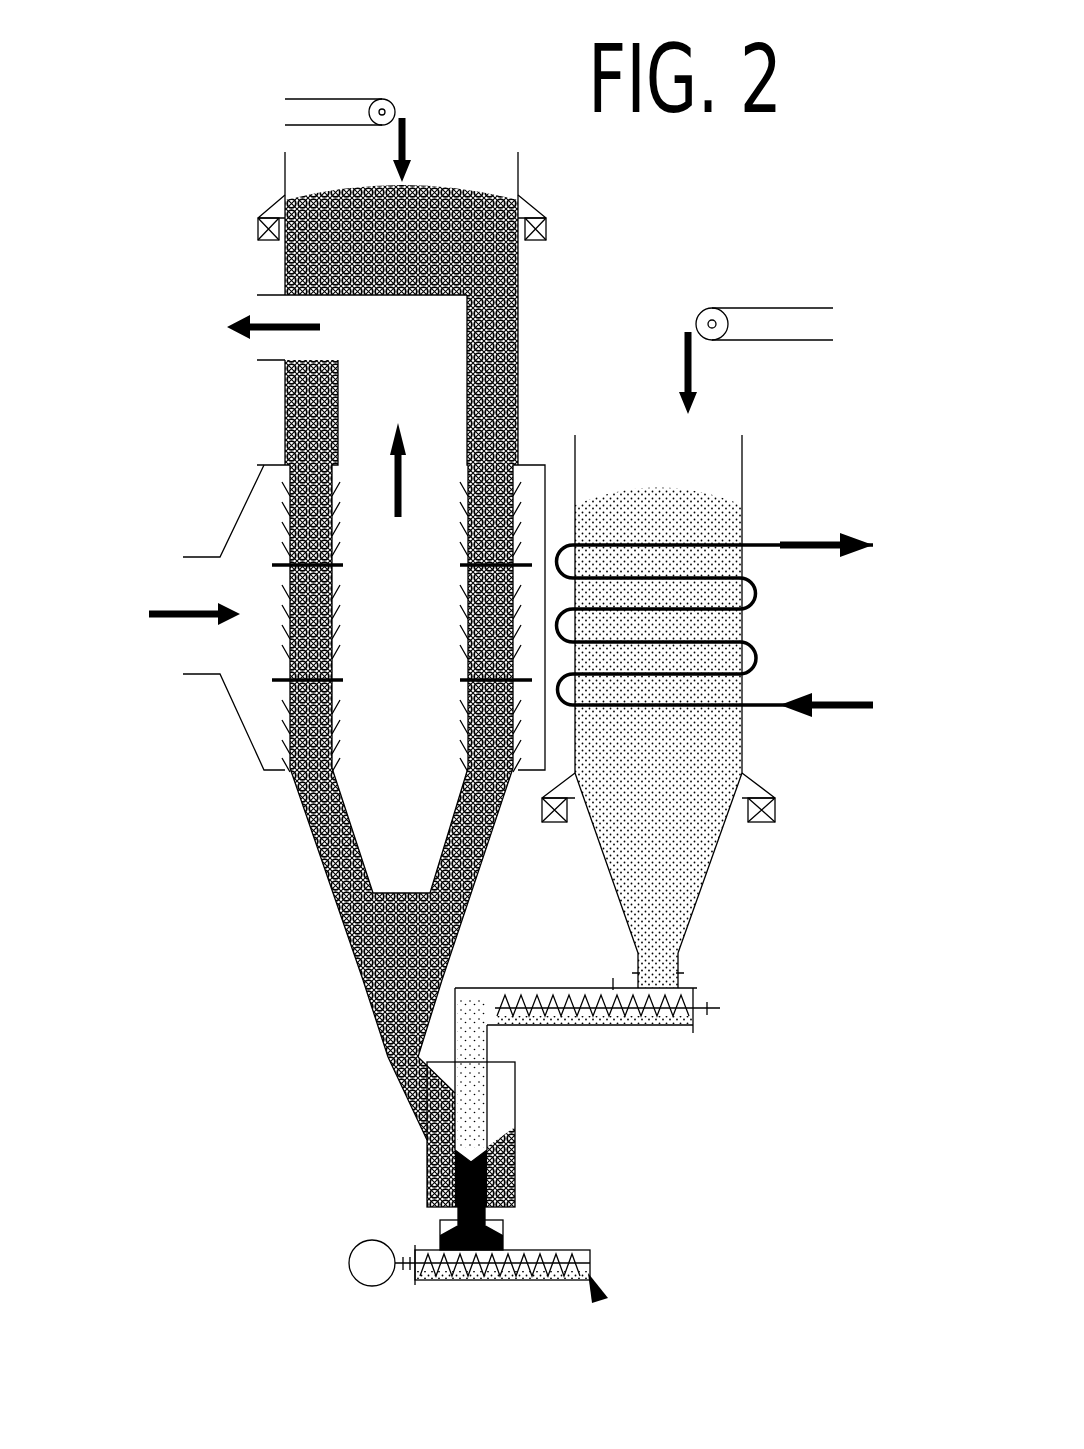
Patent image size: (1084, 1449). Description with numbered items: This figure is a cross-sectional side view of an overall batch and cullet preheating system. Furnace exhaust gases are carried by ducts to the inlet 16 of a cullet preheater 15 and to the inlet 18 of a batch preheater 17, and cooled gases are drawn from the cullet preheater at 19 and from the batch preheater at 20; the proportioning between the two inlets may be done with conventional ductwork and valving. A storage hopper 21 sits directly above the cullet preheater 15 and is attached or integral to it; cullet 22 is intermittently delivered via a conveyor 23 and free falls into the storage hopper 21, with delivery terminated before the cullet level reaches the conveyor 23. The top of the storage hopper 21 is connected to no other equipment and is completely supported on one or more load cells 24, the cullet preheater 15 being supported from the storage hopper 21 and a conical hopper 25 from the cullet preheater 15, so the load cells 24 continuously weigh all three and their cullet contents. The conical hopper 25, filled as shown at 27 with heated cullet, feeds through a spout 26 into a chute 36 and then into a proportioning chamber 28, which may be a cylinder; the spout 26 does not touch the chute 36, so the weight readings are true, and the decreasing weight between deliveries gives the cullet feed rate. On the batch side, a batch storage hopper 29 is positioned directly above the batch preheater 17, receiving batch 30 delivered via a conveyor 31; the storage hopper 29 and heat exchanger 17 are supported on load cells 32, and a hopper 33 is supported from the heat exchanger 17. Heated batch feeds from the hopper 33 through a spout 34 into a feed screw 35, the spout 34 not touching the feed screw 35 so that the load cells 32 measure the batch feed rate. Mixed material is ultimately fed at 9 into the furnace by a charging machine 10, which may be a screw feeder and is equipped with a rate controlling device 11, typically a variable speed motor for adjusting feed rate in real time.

The feed point 9 is at (593, 1300).
The charging machine 10 is at (457, 1278).
The rate controlling device 11 is at (353, 1248).
The cullet preheater 15 is at (264, 463).
The inlet of the cullet preheater 16 is at (166, 613).
The batch preheater 17 is at (742, 628).
The inlet of the batch preheater 18 is at (818, 703).
The cooled gas outlet of the cullet preheater 19 is at (251, 322).
The cooled gas outlet of the batch preheater 20 is at (832, 537).
The storage hopper 21 is at (286, 185).
The cullet 22 is at (407, 130).
The conveyor 23 is at (332, 97).
The load cells 24 is at (257, 220).
The conical hopper 25 is at (338, 907).
The spout 26 is at (390, 1048).
The heated cullet fill 27 is at (365, 973).
The proportioning chamber 28 is at (430, 1148).
The batch storage hopper 29 is at (742, 460).
The batch 30 is at (697, 382).
The conveyor 31 is at (772, 308).
The load cells 32 is at (775, 820).
The hopper 33 is at (697, 910).
The spout 34 is at (655, 968).
The feed screw 35 is at (600, 1017).
The chute 36 is at (407, 1093).